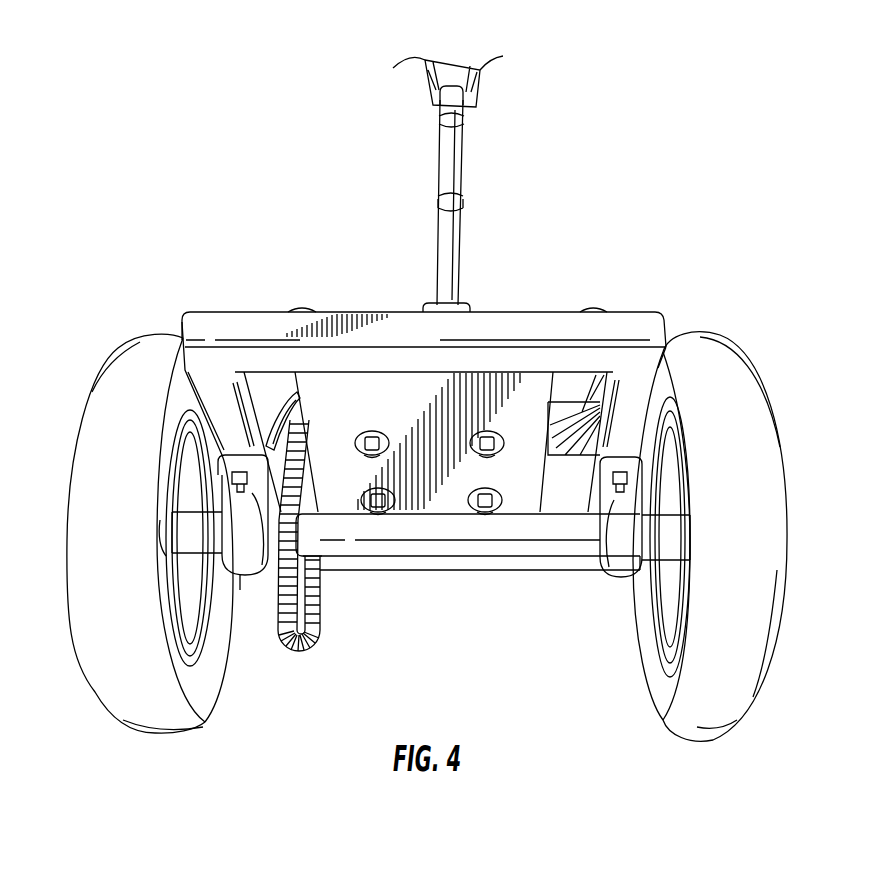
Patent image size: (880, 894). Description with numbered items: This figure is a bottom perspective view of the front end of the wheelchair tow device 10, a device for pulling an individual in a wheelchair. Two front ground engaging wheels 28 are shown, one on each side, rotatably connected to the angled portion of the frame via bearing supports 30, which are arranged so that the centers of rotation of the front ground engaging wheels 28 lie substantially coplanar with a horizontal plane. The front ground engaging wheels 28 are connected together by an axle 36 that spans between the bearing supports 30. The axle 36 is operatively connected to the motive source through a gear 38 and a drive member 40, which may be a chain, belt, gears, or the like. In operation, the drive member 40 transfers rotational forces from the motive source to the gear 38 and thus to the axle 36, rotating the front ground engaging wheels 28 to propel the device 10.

The wheelchair tow device 10 is at (661, 104).
The front ground engaging wheels 28 is at (93, 460).
The bearing supports 30 is at (243, 578).
The axle 36 is at (451, 537).
The gear 38 is at (303, 575).
The drive member 40 is at (293, 650).